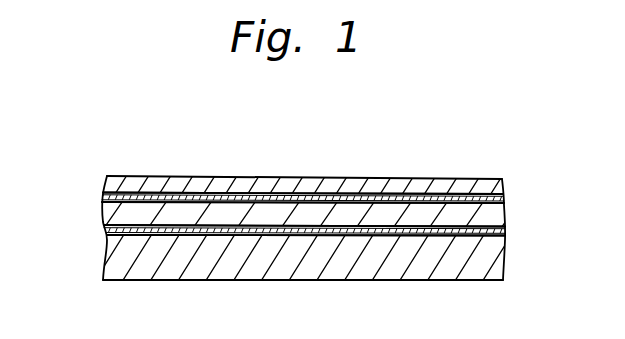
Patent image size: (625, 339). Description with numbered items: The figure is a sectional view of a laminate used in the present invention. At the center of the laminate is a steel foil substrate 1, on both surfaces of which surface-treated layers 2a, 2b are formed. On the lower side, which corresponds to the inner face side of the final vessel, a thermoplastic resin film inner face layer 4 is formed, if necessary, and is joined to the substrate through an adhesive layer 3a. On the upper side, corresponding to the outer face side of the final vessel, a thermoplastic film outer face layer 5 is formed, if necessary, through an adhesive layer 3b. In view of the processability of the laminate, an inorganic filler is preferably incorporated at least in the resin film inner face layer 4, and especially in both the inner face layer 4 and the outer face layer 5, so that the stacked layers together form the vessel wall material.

The steel foil substrate 1 is at (495, 213).
The surface-treated layer 2a is at (505, 228).
The surface-treated layer 2b is at (500, 198).
The adhesive layer 3a is at (105, 233).
The adhesive layer 3b is at (107, 196).
The thermoplastic resin film inner face layer 4 is at (495, 273).
The thermoplastic film outer face layer 5 is at (501, 180).